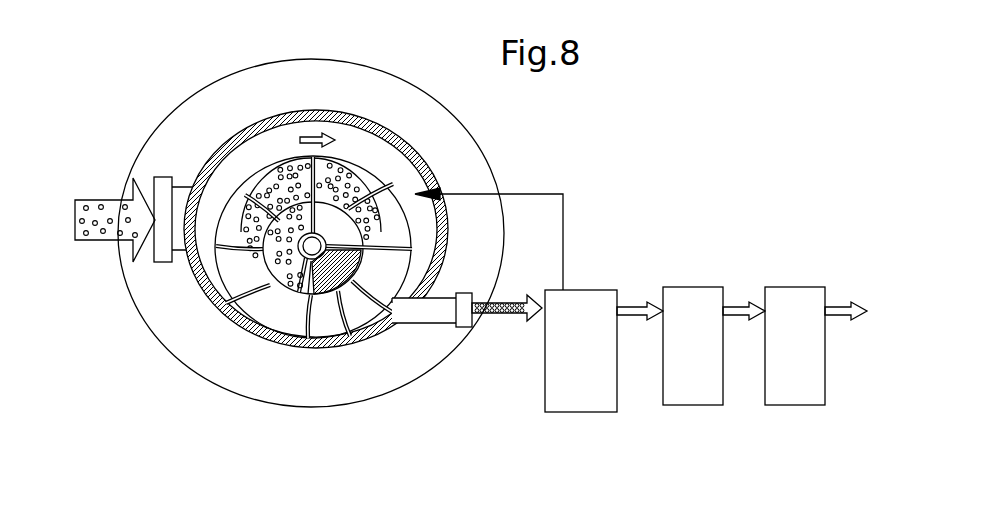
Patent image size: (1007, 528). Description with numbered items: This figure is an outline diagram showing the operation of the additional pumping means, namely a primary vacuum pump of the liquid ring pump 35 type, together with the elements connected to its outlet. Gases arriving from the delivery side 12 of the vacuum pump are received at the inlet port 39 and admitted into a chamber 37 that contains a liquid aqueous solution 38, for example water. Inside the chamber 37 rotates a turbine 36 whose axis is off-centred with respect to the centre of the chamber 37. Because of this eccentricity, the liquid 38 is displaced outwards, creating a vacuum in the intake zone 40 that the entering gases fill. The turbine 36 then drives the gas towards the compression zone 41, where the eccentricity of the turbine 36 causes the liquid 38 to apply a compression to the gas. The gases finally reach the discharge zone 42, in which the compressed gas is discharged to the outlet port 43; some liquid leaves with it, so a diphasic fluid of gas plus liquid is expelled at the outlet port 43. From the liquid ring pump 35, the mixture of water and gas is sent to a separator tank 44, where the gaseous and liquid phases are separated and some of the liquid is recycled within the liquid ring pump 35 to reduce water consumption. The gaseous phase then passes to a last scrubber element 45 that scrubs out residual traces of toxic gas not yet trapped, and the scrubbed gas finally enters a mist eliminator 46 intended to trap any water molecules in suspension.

The delivery side 12 is at (67, 231).
The liquid ring pump 35 is at (502, 127).
The turbine 36 is at (447, 268).
The chamber 37 is at (243, 130).
The liquid aqueous solution 38 is at (367, 143).
The inlet port 39 is at (165, 177).
The intake zone 40 is at (250, 262).
The compression zone 41 is at (397, 200).
The discharge zone 42 is at (335, 325).
The outlet port 43 is at (477, 328).
The separator tank 44 is at (572, 407).
The scrubber element 45 is at (714, 262).
The mist eliminator 46 is at (813, 398).